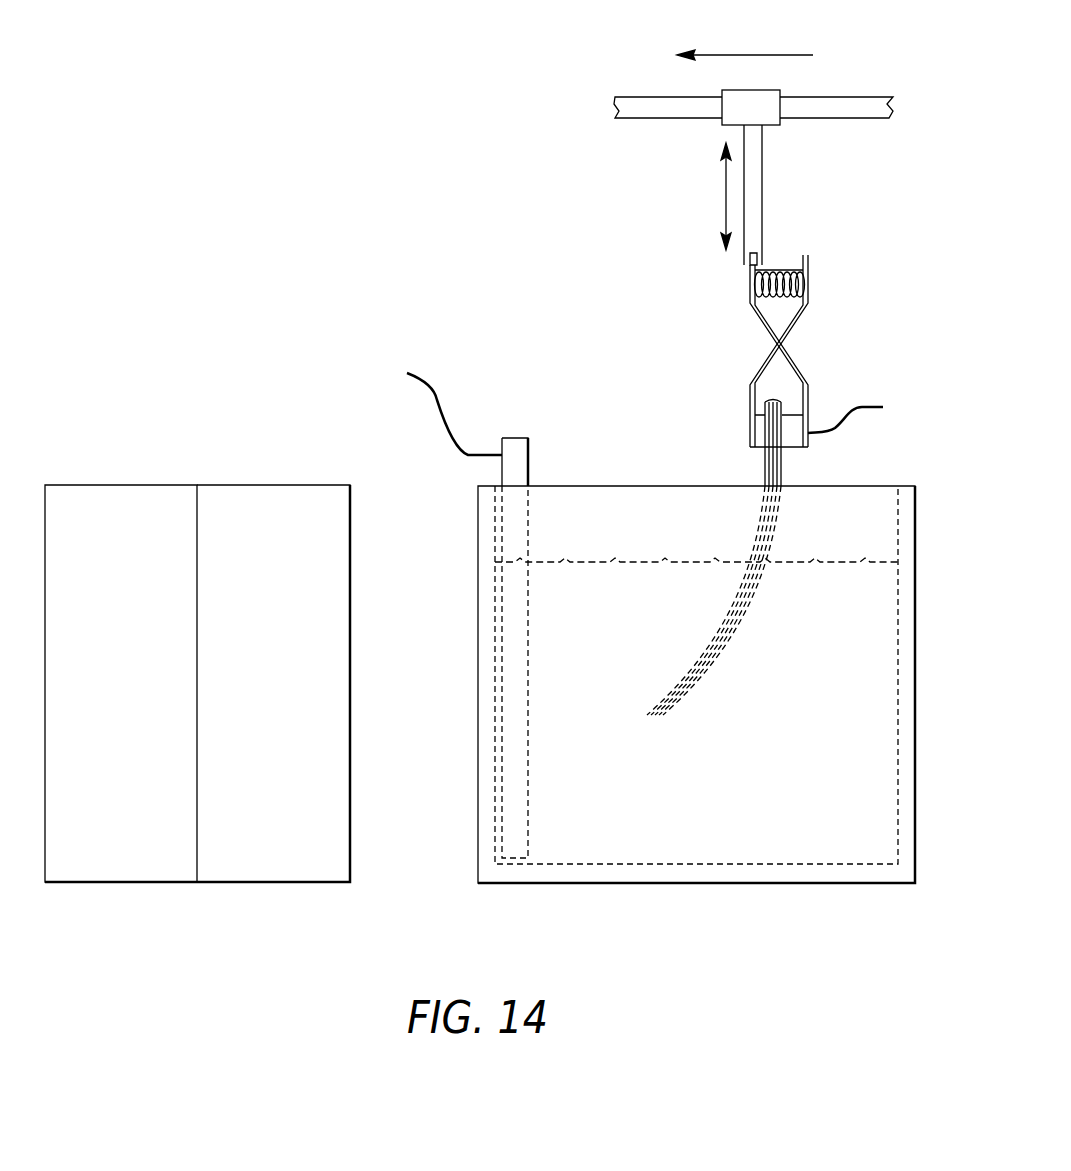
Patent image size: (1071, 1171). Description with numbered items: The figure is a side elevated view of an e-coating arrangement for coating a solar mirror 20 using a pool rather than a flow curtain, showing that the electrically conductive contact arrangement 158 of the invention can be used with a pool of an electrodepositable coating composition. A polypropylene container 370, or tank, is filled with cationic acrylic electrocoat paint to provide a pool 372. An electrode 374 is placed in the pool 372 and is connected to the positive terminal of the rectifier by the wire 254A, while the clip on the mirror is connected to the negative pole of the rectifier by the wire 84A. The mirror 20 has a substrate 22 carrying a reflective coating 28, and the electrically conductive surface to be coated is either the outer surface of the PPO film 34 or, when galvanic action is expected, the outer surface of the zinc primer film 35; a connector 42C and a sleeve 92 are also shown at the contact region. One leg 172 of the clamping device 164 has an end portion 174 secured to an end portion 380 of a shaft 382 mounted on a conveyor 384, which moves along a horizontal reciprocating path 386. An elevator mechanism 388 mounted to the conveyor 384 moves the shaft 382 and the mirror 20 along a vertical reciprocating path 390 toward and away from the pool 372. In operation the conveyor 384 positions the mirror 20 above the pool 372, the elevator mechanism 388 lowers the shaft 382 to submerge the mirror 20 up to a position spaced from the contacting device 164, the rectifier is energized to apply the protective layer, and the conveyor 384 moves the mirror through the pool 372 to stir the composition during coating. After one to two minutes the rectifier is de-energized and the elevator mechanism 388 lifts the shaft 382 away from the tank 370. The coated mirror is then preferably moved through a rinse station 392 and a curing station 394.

The solar mirror 20 is at (784, 470).
The substrate 22 is at (655, 713).
The reflective coating 28 is at (652, 727).
The PPO film 34 is at (651, 730).
The zinc primer film 35 is at (660, 727).
The tube connector 42C is at (775, 402).
The wire 84A is at (860, 406).
The connector sleeve 92 is at (785, 456).
The electrically conductive contact arrangement 158 is at (706, 433).
The clamping device 164 is at (838, 318).
The leg 172 is at (748, 290).
The end portion 174 is at (748, 258).
The wire 254A is at (437, 403).
The container 370 is at (477, 843).
The pool 372 is at (573, 606).
The electrode 374 is at (529, 462).
The end portion 380 is at (762, 254).
The shaft 382 is at (762, 190).
The conveyor 384 is at (637, 96).
The horizontal reciprocating path 386 is at (726, 193).
The elevator mechanism 388 is at (768, 128).
The vertical reciprocating path 390 is at (754, 55).
The rinse station 392 is at (273, 863).
The curing station 394 is at (124, 863).